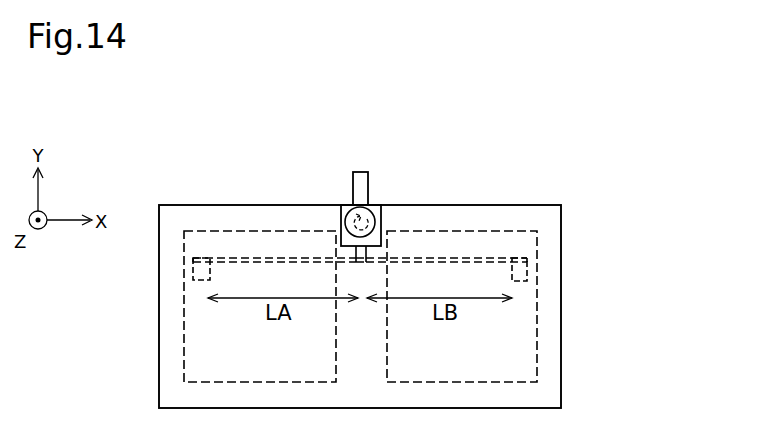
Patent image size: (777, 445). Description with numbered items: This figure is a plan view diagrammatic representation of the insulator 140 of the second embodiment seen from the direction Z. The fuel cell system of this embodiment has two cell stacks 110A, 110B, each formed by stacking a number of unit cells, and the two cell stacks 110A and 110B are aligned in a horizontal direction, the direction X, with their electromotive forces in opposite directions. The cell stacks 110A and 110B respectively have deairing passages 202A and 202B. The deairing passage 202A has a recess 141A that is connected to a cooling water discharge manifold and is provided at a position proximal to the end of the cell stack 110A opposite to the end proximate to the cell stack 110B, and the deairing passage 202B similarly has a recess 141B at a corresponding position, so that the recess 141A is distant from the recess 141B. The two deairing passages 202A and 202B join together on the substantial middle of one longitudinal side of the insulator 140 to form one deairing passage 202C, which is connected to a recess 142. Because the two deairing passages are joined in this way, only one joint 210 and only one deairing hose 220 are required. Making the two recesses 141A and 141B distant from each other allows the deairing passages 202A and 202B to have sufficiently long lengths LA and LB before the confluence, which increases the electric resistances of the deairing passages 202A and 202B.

The insulator 140 is at (561, 228).
The cell stack 110A is at (184, 332).
The cell stack 110B is at (537, 315).
The recess 141A is at (193, 265).
The recess 141B is at (527, 268).
The deairing passage 202A is at (234, 258).
The deairing passage 202B is at (494, 258).
The deairing passage 202C is at (355, 256).
The joint 210 is at (350, 206).
The deairing hose 220 is at (368, 178).
The recess 142 is at (372, 213).